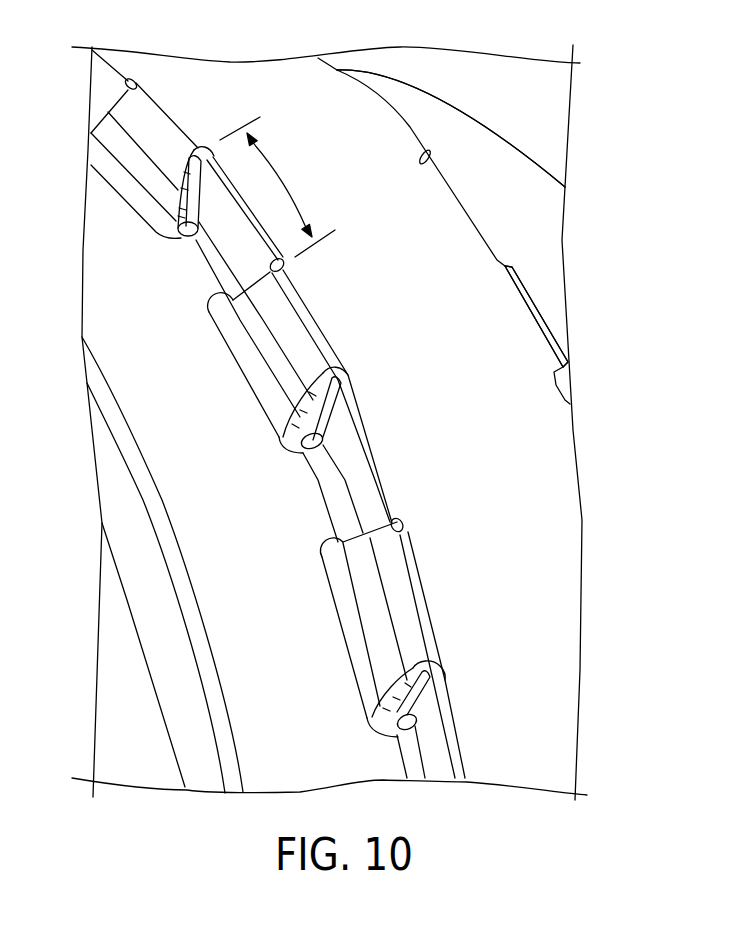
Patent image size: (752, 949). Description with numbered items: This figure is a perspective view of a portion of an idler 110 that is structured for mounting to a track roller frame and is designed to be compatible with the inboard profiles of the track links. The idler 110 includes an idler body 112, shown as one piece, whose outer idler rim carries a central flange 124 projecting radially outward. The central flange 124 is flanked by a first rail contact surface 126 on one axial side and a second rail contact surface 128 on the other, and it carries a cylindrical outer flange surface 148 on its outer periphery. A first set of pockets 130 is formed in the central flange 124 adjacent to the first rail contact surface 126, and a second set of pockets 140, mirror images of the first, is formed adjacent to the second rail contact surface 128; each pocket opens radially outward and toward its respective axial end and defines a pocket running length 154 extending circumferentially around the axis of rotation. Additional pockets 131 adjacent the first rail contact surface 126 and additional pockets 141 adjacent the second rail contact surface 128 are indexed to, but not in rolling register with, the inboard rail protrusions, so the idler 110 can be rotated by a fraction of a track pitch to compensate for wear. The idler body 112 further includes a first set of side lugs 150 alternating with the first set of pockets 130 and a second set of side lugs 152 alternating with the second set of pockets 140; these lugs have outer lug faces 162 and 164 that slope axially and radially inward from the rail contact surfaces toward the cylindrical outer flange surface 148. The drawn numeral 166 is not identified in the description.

The idler 110 is at (659, 151).
The idler body 112 is at (435, 96).
The central flange 124 is at (560, 517).
The first rail contact surface 126 is at (97, 313).
The second rail contact surface 128 is at (537, 177).
The first set of pockets 130 is at (230, 231).
The additional pockets (third set of pockets) 131 is at (357, 462).
The second set of pockets 140 is at (451, 188).
The additional pockets (fourth set of pockets) 141 is at (337, 66).
The cylindrical outer flange surface 148 is at (495, 524).
The first set of side lugs 150 is at (173, 154).
The second set of side lugs 152 is at (412, 127).
The pocket running length 154 is at (297, 197).
The outer lug faces (of first side lugs) 162 is at (251, 362).
The outer lug faces (of second side lugs) 164 is at (539, 278).
The lay direction 166 is at (362, 508).